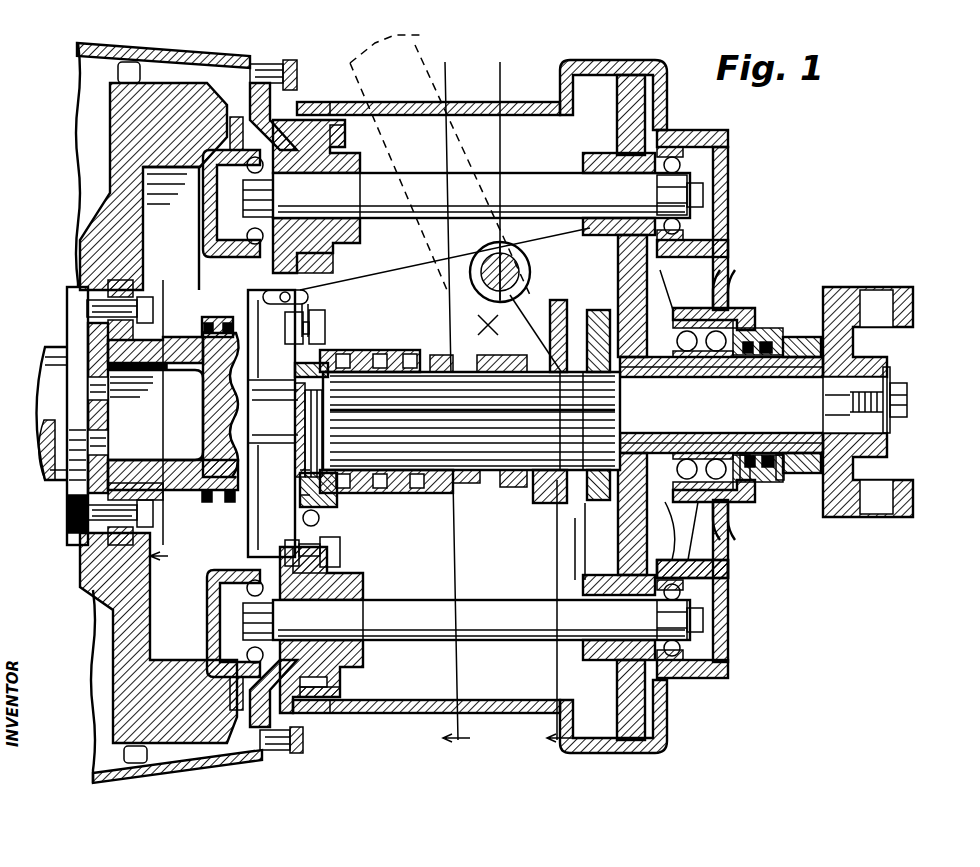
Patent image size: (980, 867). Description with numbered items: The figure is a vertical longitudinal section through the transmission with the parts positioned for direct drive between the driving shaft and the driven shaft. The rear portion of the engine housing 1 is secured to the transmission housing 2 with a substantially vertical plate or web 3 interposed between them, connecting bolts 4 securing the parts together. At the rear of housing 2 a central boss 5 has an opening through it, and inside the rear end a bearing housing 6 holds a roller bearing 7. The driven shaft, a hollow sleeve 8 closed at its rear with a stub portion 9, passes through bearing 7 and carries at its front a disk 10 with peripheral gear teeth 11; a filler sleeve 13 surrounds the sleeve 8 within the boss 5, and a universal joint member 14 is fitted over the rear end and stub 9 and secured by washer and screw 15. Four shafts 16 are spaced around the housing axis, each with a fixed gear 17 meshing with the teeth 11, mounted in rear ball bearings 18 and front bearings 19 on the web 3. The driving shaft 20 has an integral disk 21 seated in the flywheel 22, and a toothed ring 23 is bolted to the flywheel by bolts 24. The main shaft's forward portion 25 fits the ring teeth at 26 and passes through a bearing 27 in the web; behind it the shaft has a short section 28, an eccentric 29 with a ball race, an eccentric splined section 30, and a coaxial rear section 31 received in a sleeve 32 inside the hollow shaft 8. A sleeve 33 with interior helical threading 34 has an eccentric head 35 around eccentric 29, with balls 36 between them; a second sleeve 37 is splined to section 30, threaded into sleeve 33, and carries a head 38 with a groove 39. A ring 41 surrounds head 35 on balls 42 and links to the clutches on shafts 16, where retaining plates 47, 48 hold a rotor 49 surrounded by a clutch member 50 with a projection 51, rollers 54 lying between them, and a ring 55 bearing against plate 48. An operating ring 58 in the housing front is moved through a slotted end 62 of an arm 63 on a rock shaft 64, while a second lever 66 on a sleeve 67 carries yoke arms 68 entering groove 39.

The engine housing 1 is at (195, 50).
The transmission housing 2 is at (312, 100).
The plate or web 3 is at (245, 530).
The connecting bolts 4 is at (288, 62).
The central boss 5 is at (765, 328).
The bearing housing 6 is at (728, 288).
The roller bearing 7 is at (738, 318).
The hollow sleeve 8 is at (763, 500).
The stub portion 9 is at (878, 456).
The disk 10 is at (672, 498).
The gear teeth 11 is at (672, 528).
The filler sleeve 13 is at (782, 475).
The universal joint member 14 is at (848, 347).
The washer and screw 15 is at (908, 396).
The shafts 16 is at (528, 182).
The fixed gear 17 is at (646, 110).
The ball bearings 18 is at (685, 170).
The bearings 19 is at (240, 246).
The driving shaft 20 is at (42, 480).
The disk 21 is at (70, 525).
The flywheel 22 is at (120, 189).
The ring 23 is at (138, 284).
The bolts 24 is at (90, 300).
The forward portion of main shaft 25 is at (180, 337).
The toothed connection 26 is at (118, 484).
The bearing 27 is at (215, 502).
The short section 28 is at (262, 400).
The eccentric 29 is at (300, 452).
The splined section 30 is at (503, 436).
The rear section 31 is at (806, 456).
The sleeve 32 is at (808, 336).
The sleeve 33 is at (368, 497).
The helical threading 34 is at (413, 498).
The eccentric head 35 is at (307, 498).
The balls 36 is at (307, 478).
The second sleeve 37 is at (540, 504).
The eccentric head 38 is at (597, 502).
The groove 39 is at (577, 500).
The ring 41 is at (320, 520).
The balls 42 is at (338, 505).
The retaining plate 47 is at (338, 147).
The retaining plate 48 is at (250, 114).
The rotor 49 is at (325, 176).
The clutch member 50 is at (320, 94).
The projection 51 is at (290, 334).
The roller 54 is at (332, 133).
The ring 55 is at (241, 413).
The operating ring 58 is at (305, 714).
The slotted end 62 is at (226, 317).
The arm 63 is at (393, 282).
The rock shaft 64 is at (527, 268).
The second lever 66 is at (422, 52).
The sleeve 67 is at (530, 282).
The yoke arms 68 is at (478, 331).